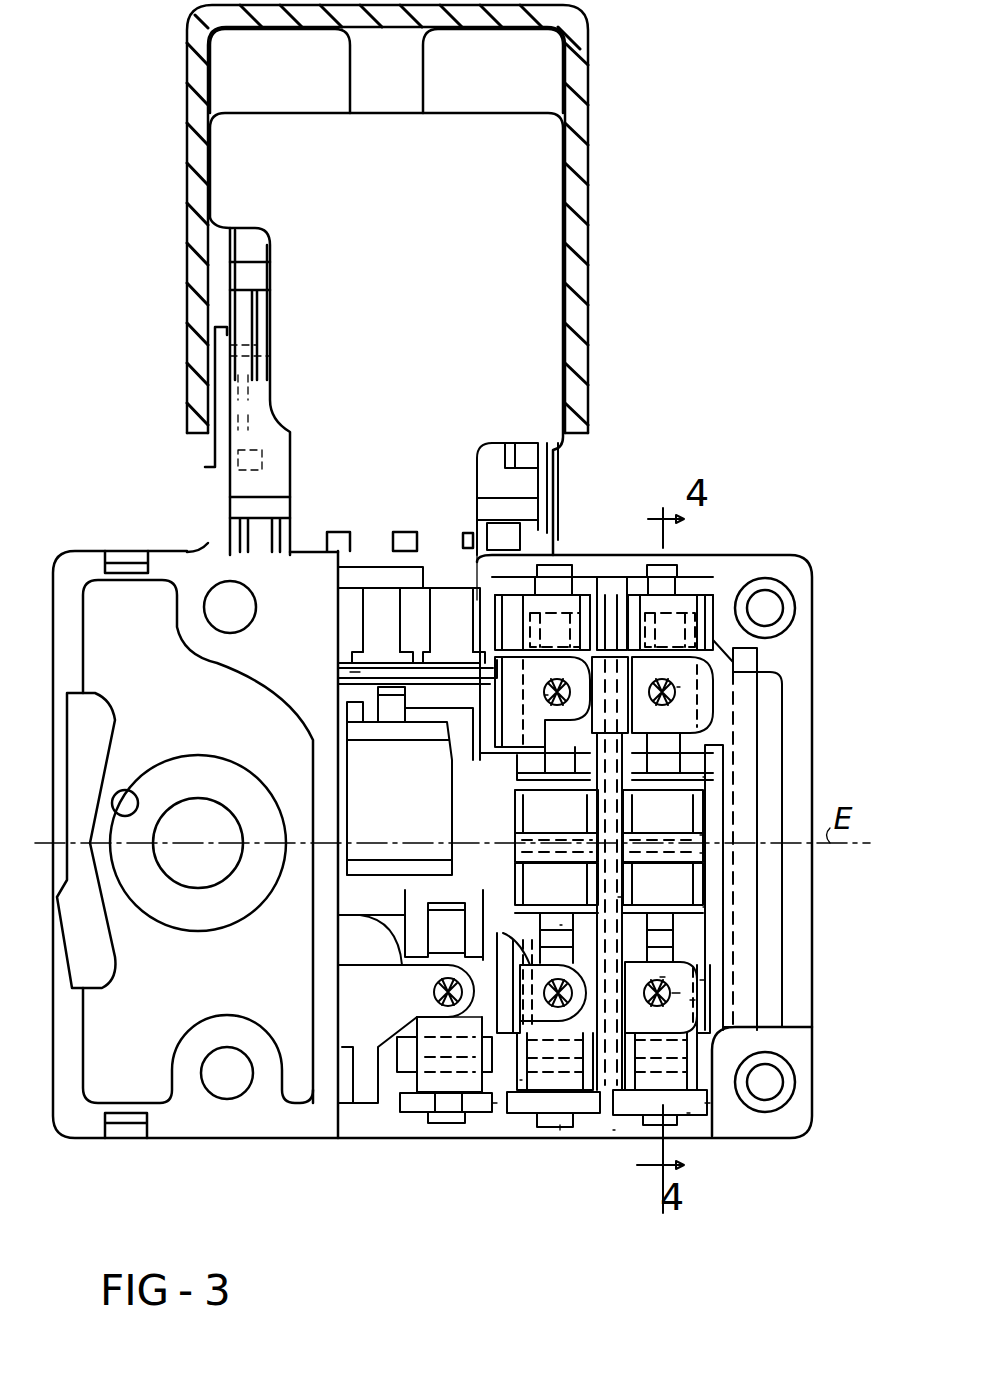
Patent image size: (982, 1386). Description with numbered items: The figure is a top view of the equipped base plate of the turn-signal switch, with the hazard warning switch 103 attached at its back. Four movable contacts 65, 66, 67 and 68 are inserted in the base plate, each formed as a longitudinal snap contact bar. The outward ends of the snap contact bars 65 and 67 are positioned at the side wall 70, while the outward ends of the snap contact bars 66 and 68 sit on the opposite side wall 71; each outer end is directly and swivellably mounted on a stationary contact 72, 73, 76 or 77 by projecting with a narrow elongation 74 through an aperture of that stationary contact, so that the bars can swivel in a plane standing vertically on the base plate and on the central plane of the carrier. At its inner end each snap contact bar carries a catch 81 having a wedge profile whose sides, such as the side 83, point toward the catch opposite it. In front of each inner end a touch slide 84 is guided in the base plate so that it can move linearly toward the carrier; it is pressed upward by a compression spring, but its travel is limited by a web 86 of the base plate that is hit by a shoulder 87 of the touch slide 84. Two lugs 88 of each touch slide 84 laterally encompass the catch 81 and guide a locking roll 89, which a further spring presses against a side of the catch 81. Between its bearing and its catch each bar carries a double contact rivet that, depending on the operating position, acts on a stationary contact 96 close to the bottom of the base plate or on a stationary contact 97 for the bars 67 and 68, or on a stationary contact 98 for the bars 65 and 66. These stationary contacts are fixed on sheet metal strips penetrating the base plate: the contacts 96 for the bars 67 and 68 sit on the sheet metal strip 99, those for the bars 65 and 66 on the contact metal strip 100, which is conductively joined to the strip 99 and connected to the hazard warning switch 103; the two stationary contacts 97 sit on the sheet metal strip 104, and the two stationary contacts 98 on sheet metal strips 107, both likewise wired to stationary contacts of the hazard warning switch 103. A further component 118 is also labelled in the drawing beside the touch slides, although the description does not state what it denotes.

The hazard warning switch 103 is at (612, 318).
The stationary contact 77 is at (535, 590).
The narrow elongation 74 is at (540, 578).
The side wall 71 is at (618, 548).
The movable contact 66 is at (578, 600).
The stationary contact 73 is at (690, 598).
The movable contact 68 is at (705, 592).
The sheet metal strip 107 is at (352, 673).
The stationary contact 97 is at (677, 687).
The touch slide 84 is at (703, 777).
The sheet metal strip 104 is at (748, 773).
The web 86 is at (700, 835).
The shoulder 87 is at (700, 853).
The side 83 is at (700, 980).
The lugs 88 is at (660, 977).
The catch 81 is at (672, 993).
The stationary contact 96 is at (690, 1000).
The movable contact 67 is at (705, 1103).
The stationary contact 72 is at (687, 1113).
The side wall 70 is at (613, 1130).
The stationary contact 98 is at (545, 695).
The coil 118 is at (523, 803).
The contact metal strip 100 is at (588, 812).
The locking roll 89 is at (560, 925).
The sheet metal strip 99 is at (618, 897).
The movable contact 65 is at (493, 1103).
The stationary contact 76 is at (520, 1080).